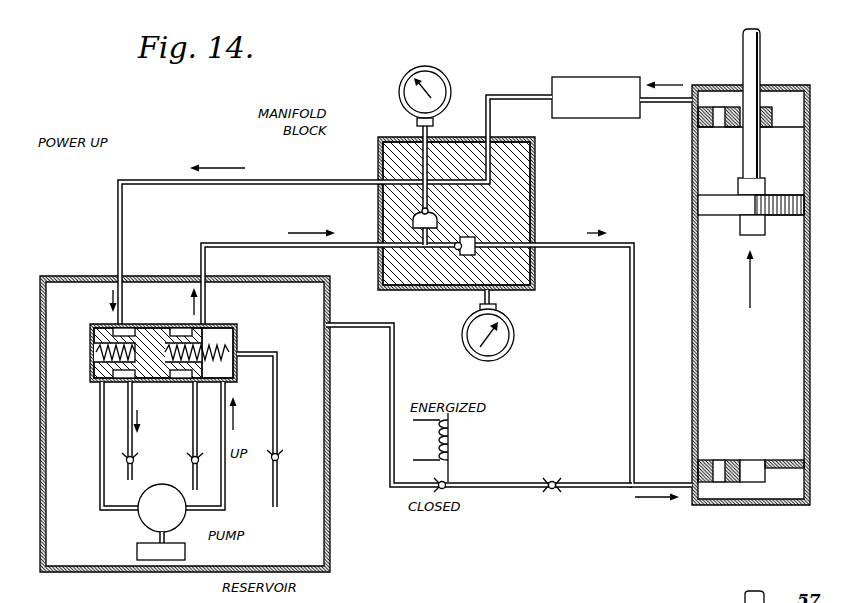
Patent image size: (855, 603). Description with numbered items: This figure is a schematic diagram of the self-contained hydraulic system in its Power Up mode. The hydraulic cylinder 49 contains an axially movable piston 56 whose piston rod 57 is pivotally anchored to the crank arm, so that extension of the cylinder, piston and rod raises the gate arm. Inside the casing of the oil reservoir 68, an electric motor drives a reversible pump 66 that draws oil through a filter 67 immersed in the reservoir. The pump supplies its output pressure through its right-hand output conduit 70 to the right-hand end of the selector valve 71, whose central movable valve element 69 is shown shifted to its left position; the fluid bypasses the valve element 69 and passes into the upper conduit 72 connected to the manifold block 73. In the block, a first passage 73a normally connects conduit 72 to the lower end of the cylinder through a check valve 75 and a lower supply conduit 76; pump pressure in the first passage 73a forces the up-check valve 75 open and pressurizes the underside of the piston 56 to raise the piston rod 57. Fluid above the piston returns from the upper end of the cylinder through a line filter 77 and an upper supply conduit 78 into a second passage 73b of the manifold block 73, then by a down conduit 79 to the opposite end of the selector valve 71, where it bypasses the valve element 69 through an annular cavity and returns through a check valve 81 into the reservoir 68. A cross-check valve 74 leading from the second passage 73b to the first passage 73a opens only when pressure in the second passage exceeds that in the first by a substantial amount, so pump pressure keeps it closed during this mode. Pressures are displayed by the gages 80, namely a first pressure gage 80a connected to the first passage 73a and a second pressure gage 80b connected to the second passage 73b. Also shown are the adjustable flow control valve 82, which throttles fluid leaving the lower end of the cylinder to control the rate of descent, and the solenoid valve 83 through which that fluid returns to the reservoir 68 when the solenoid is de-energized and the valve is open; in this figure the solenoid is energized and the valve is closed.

The hydraulic cylinder 49 is at (810, 363).
The piston 56 is at (782, 197).
The piston rod 57 is at (760, 58).
The pump 66 is at (138, 517).
The filter 67 is at (137, 550).
The oil reservoir 68 is at (82, 573).
The valve element 69 is at (147, 337).
The right-hand output conduit 70 is at (227, 478).
The selector valve 71 is at (237, 335).
The upper conduit 72 is at (225, 243).
The manifold block 73 is at (382, 163).
The first passage 73a is at (443, 250).
The second passage 73b is at (455, 182).
The cross-check valve 74 is at (413, 216).
The check valve 75 is at (474, 238).
The lower supply conduit 76 is at (652, 485).
The line filter 77 is at (582, 73).
The upper supply conduit 78 is at (535, 102).
The down conduit 79 is at (118, 218).
The suction line 80 is at (97, 438).
The first pressure gage 80a is at (517, 347).
The second pressure gage 80b is at (432, 65).
The check valve 81 is at (132, 458).
The adjustable flow control valve 82 is at (558, 480).
The solenoid valve 83 is at (452, 472).